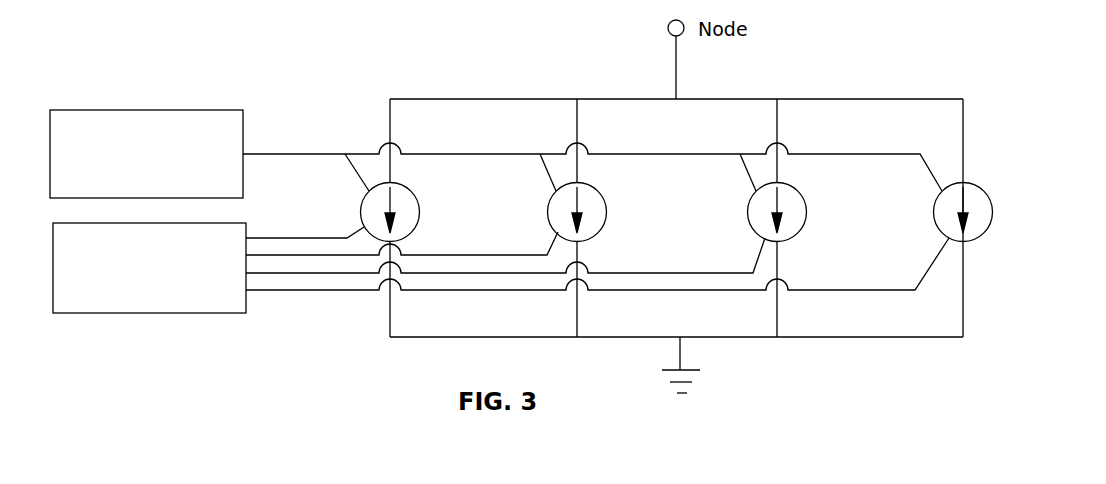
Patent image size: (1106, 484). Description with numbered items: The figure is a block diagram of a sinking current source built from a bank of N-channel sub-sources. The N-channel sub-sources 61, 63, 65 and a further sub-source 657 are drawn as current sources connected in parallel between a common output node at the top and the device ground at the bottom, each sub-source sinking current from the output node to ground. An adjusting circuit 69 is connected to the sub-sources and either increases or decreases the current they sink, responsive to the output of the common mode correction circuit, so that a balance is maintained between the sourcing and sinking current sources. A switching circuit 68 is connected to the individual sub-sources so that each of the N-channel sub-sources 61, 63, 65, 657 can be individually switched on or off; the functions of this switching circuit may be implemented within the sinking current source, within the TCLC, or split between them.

The adjusting circuit 69 is at (182, 110).
The switching circuit 68 is at (185, 313).
The N-channel sub-source 61 is at (411, 191).
The N-channel sub-source 63 is at (598, 191).
The N-channel sub-source 65 is at (798, 191).
The current source 657 is at (985, 191).